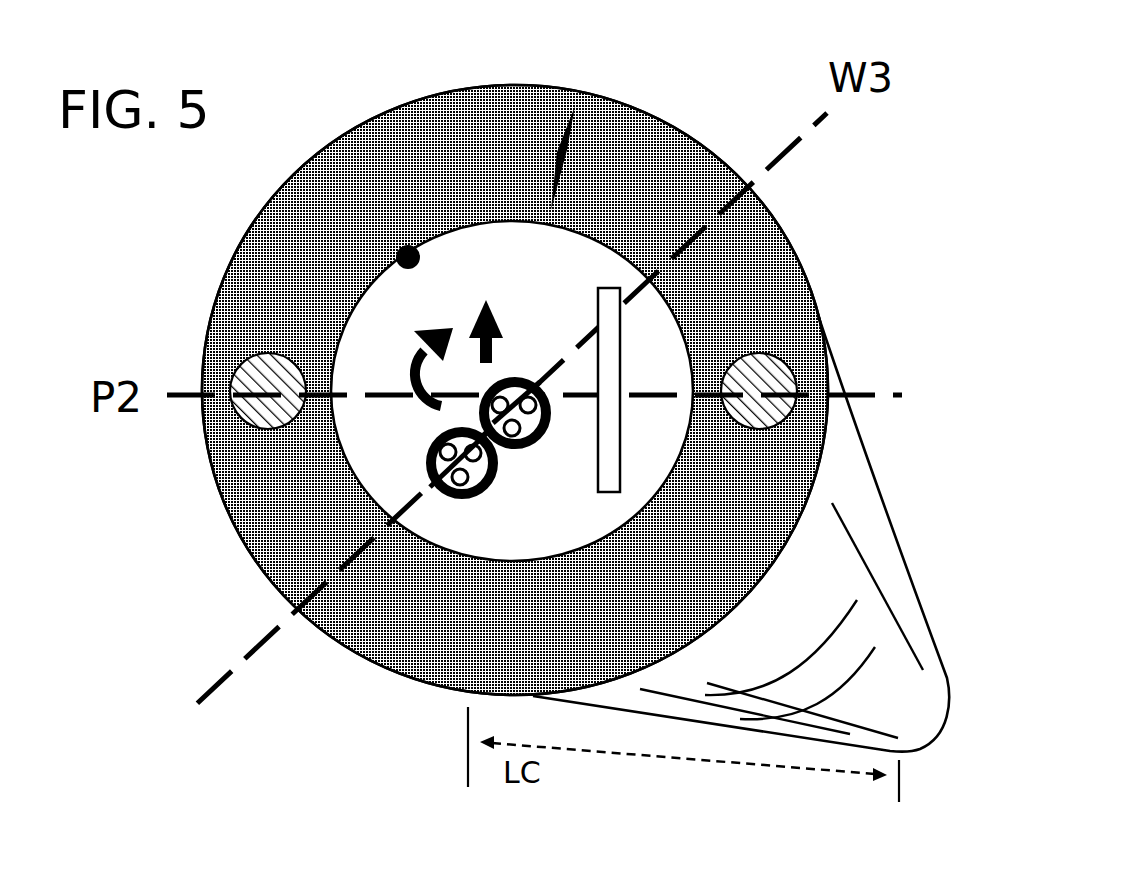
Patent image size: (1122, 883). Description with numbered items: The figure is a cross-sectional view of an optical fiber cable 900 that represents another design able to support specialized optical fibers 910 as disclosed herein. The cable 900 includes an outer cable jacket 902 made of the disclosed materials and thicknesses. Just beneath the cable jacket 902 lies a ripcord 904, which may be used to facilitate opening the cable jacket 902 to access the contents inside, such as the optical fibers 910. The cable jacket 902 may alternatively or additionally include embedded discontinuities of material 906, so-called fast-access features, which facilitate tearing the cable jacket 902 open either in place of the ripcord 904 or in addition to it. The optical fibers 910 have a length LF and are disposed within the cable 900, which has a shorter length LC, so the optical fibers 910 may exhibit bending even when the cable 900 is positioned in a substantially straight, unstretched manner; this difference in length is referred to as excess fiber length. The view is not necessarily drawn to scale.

The cable 900 is at (721, 88).
The cable jacket 902 is at (447, 140).
The ripcord 904 is at (402, 250).
The embedded discontinuities of material 906 is at (557, 152).
The optical fibers 910 is at (530, 447).